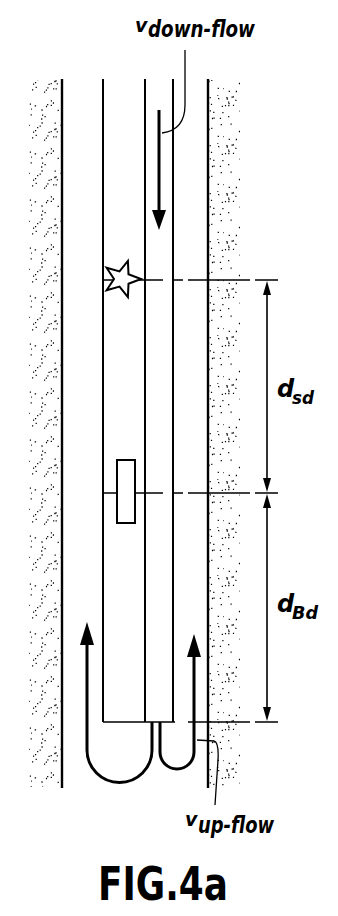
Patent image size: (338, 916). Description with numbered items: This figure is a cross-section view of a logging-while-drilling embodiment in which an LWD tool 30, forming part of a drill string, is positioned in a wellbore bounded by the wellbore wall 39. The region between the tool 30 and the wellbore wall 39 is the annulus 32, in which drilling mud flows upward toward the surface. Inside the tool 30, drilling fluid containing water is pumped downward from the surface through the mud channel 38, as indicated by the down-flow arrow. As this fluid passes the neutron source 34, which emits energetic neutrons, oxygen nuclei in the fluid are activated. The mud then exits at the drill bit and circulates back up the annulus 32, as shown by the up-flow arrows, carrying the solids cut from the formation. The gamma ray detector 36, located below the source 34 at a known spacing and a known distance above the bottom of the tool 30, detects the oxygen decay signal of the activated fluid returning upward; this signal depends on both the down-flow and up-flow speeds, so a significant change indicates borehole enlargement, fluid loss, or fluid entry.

The LWD tool 30 is at (175, 140).
The annulus 32 is at (192, 158).
The neutron source 34 is at (122, 272).
The gamma ray detector 36 is at (120, 470).
The mud channel 38 is at (163, 255).
The wellbore wall 39 is at (208, 207).